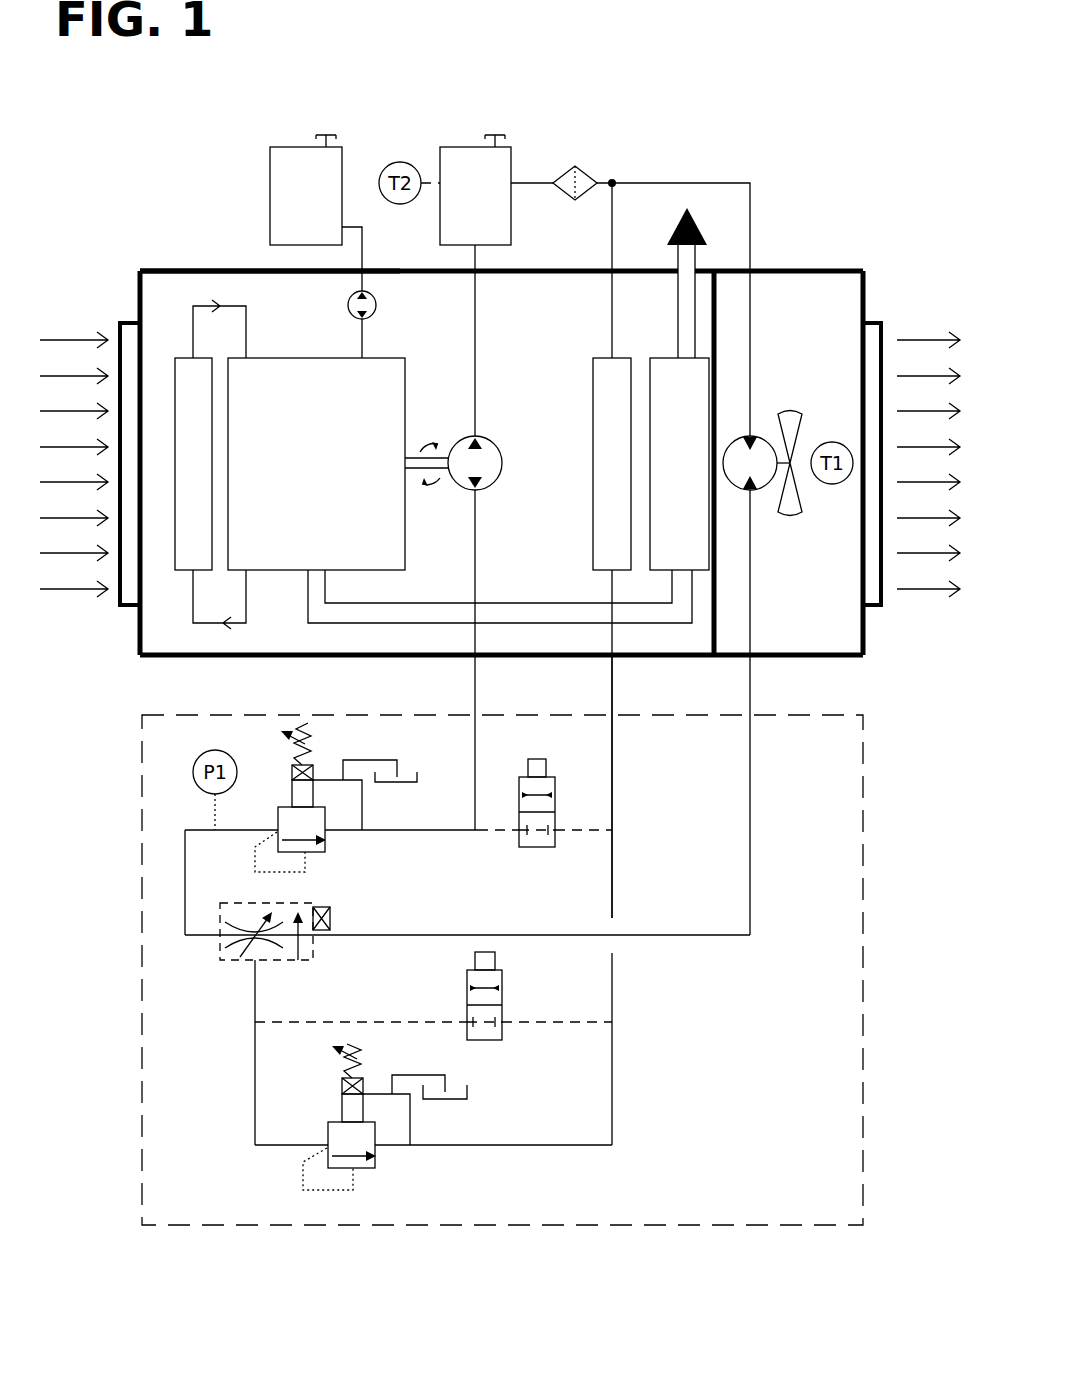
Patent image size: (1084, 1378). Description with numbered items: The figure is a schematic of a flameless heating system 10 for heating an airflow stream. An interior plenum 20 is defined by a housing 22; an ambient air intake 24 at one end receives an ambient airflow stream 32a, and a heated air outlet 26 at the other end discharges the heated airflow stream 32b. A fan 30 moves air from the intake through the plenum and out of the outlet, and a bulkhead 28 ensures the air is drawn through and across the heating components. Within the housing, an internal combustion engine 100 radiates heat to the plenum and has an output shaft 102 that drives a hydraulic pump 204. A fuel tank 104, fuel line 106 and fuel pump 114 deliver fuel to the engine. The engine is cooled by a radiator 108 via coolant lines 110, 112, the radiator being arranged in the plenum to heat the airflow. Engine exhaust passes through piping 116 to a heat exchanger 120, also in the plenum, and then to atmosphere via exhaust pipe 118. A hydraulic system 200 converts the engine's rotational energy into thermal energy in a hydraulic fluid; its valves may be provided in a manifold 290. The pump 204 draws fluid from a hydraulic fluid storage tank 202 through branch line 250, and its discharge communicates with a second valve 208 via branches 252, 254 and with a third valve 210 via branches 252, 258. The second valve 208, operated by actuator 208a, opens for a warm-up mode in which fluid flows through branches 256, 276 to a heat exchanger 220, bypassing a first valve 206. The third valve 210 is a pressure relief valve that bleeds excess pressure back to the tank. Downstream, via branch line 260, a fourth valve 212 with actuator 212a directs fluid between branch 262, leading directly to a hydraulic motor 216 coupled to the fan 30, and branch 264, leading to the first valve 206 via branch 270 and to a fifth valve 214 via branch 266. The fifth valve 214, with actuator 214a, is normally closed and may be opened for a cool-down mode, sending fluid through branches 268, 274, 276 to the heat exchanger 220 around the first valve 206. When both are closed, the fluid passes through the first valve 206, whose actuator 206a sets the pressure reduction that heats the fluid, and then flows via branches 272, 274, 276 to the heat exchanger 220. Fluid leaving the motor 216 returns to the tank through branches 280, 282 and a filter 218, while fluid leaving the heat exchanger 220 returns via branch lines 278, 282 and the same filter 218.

The flameless heating system 10 is at (134, 147).
The interior plenum 20 is at (155, 318).
The housing 22 is at (140, 271).
The ambient air intake 24 is at (127, 323).
The heated air outlet 26 is at (878, 322).
The bulkhead 28 is at (712, 626).
The fan 30 is at (793, 522).
The ambient airflow stream 32a is at (80, 601).
The heated airflow stream 32b is at (942, 600).
The internal combustion engine 100 is at (340, 357).
The output shaft 102 is at (421, 438).
The fuel tank 104 is at (270, 193).
The fuel line 106 is at (364, 256).
The radiator 108 is at (177, 572).
The coolant line 110 is at (205, 318).
The coolant line 112 is at (192, 625).
The fuel pump 114 is at (347, 303).
The piping 116 is at (318, 603).
The exhaust pipe 118 is at (685, 262).
The heat exchanger 120 is at (668, 358).
The hydraulic system 200 is at (864, 689).
The hydraulic fluid storage tank 202 is at (475, 147).
The hydraulic pump 204 is at (495, 440).
The first valve 206 is at (375, 1169).
The actuator 206a is at (366, 1083).
The second valve 208 is at (520, 777).
The actuator 208a is at (546, 760).
The third valve 210 is at (326, 853).
The fourth valve 212 is at (222, 953).
The actuator 212a is at (332, 916).
The fifth valve 214 is at (466, 972).
The actuator 214a is at (496, 960).
The hydraulic motor 216 is at (760, 430).
The filter 218 is at (585, 172).
The heat exchanger 220 is at (597, 358).
The branch line 250 is at (472, 352).
The branch 252 is at (473, 562).
The branch 254 is at (497, 834).
The branch 256 is at (600, 834).
The branch 258 is at (452, 834).
The branch line 260 is at (190, 829).
The branch 262 is at (405, 934).
The branch 264 is at (258, 984).
The branch 266 is at (343, 1021).
The branch 268 is at (548, 1021).
The branch 270 is at (258, 1060).
The branch 272 is at (512, 1144).
The branch 274 is at (614, 877).
The branch 276 is at (614, 800).
The branch line 278 is at (612, 264).
The branch 280 is at (722, 181).
The branch 282 is at (530, 180).
The manifold 290 is at (865, 835).